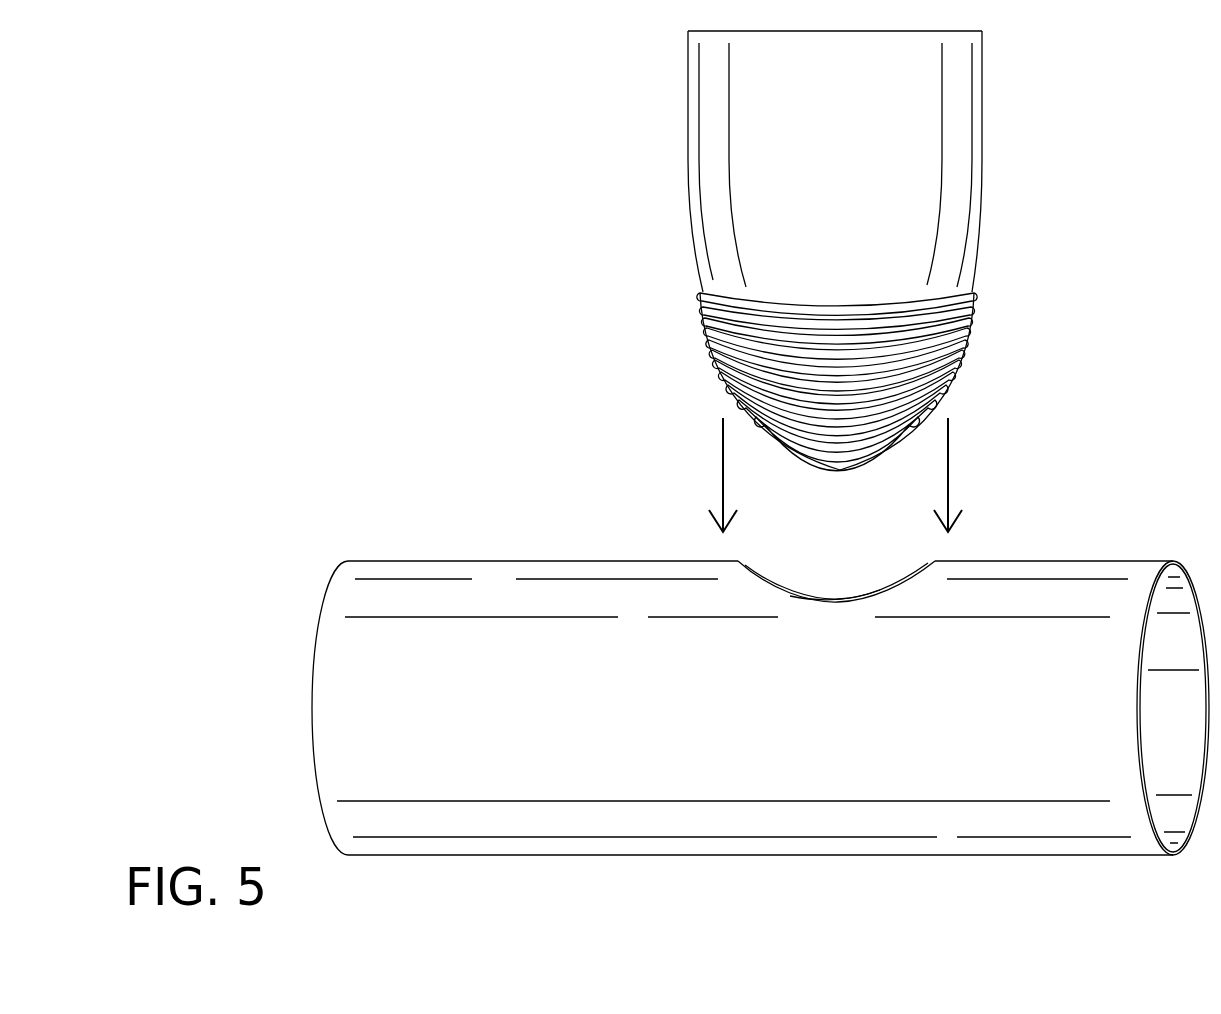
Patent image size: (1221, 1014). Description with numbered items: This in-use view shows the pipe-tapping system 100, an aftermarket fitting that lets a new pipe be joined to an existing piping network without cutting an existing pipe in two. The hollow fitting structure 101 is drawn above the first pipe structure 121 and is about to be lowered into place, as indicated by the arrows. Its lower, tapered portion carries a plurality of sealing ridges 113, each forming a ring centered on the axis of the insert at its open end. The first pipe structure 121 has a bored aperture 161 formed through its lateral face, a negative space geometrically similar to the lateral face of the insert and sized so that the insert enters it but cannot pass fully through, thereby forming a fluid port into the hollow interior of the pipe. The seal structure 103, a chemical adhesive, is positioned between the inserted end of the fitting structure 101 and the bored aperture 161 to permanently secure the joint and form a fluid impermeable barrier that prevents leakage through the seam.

The pipe-tapping system 100 is at (357, 222).
The fitting structure 101 is at (983, 180).
The plurality of sealing ridges 113 is at (940, 350).
The first pipe structure 121 is at (1062, 598).
The bored aperture 161 is at (841, 590).
The seal structure 103 is at (838, 603).